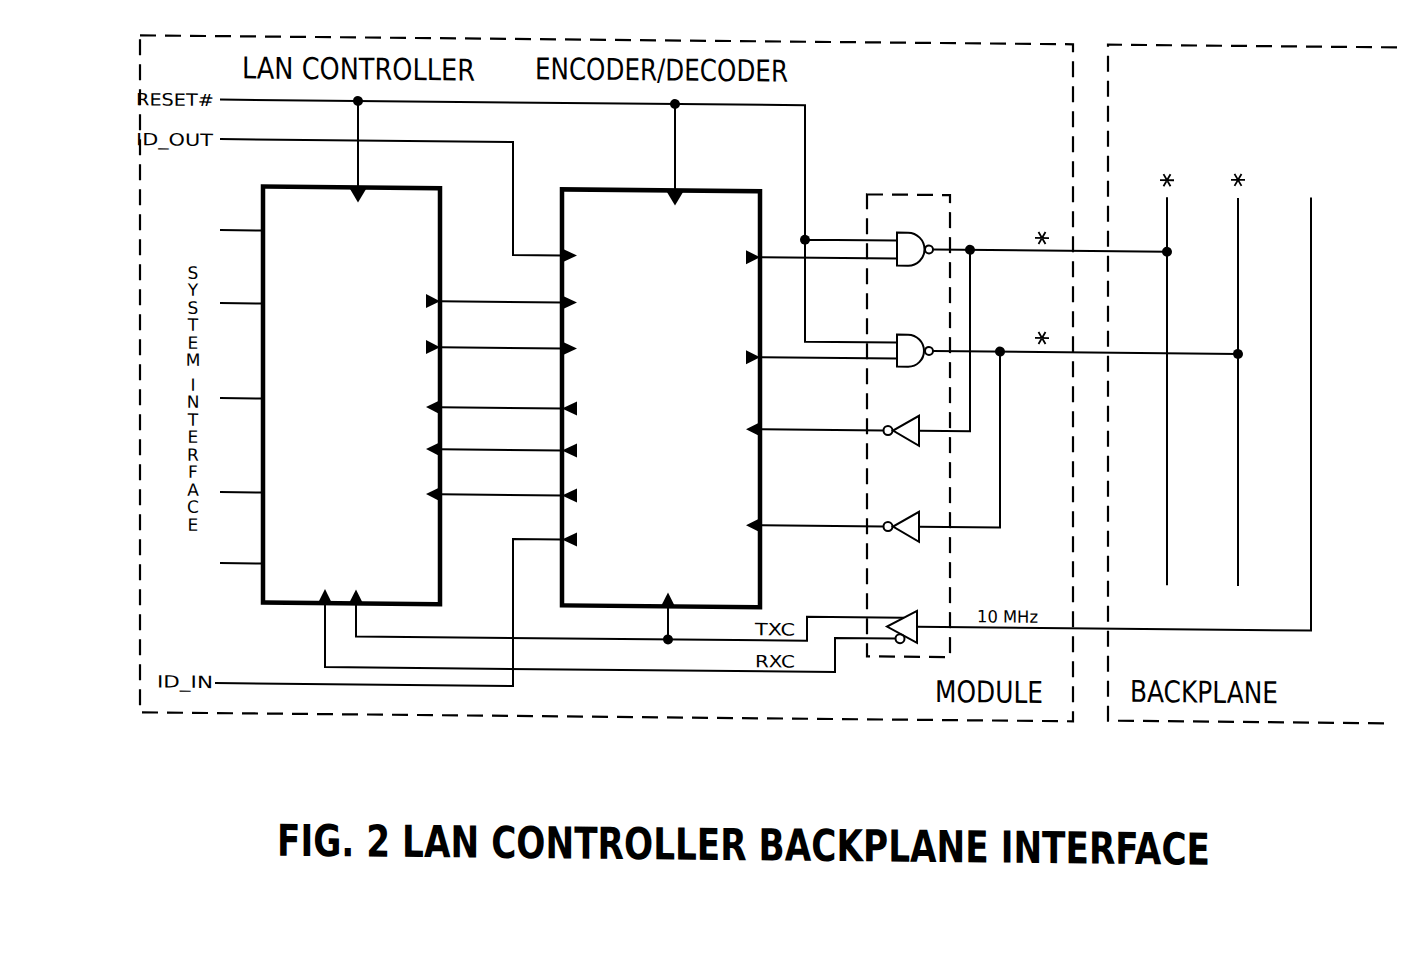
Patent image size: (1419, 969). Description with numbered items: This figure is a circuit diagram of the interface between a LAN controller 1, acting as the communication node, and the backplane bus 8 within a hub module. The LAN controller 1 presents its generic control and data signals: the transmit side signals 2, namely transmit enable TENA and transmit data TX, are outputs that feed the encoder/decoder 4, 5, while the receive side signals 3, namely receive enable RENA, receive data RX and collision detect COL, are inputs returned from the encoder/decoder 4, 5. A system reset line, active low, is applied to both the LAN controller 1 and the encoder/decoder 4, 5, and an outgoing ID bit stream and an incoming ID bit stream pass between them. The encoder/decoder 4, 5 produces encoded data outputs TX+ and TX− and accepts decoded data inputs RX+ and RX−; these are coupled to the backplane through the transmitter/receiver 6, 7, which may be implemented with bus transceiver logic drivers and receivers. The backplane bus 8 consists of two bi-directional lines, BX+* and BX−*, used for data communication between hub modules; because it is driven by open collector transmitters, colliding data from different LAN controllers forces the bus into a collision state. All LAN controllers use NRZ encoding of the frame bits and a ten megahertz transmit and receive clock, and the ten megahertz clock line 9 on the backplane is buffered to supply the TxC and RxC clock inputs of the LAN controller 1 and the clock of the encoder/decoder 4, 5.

The LAN controller 1 is at (351, 377).
The transmit signal lines (TENA, TX) 2 is at (501, 304).
The receive signal lines (RENA, RX, COL) 3 is at (501, 435).
The encoder 4 is at (661, 378).
The decoder 5 is at (661, 390).
The transmitter 6 is at (880, 396).
The receiver 7 is at (880, 396).
The backplane bus 8 is at (1105, 345).
The 10 MHz backplane clock line 9 is at (1134, 352).